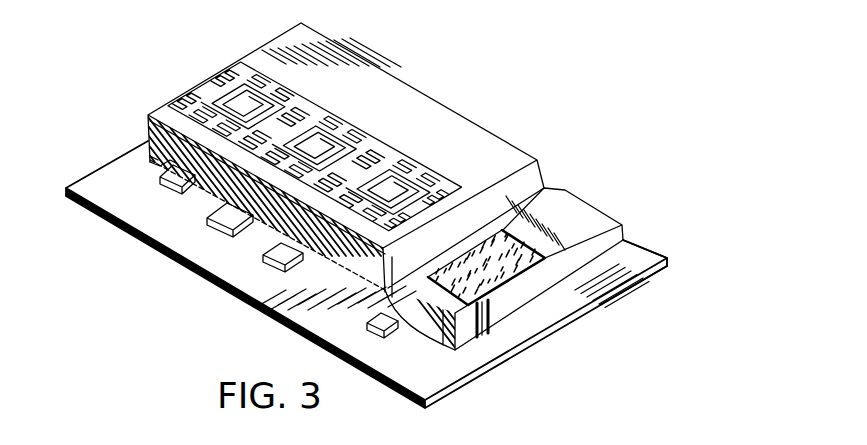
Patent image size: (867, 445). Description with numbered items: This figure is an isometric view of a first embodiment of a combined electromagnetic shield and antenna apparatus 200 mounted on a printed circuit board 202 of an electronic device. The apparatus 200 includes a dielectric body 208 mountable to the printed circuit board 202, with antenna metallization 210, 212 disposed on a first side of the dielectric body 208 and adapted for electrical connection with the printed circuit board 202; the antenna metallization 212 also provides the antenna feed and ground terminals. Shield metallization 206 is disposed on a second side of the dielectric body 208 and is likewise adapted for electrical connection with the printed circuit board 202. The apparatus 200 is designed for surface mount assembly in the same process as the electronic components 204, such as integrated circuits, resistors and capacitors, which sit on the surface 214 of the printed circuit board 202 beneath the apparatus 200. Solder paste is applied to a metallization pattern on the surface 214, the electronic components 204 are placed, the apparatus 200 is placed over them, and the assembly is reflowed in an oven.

The combined electromagnetic shield and antenna apparatus 200 is at (161, 334).
The printed circuit board 202 is at (634, 248).
The electronic components 204 is at (152, 163).
The shield metallization 206 is at (216, 191).
The dielectric body 208 is at (400, 97).
The antenna metallization 210 is at (207, 78).
The antenna metallization 212 is at (504, 292).
The surface of the PCB 214 is at (653, 255).